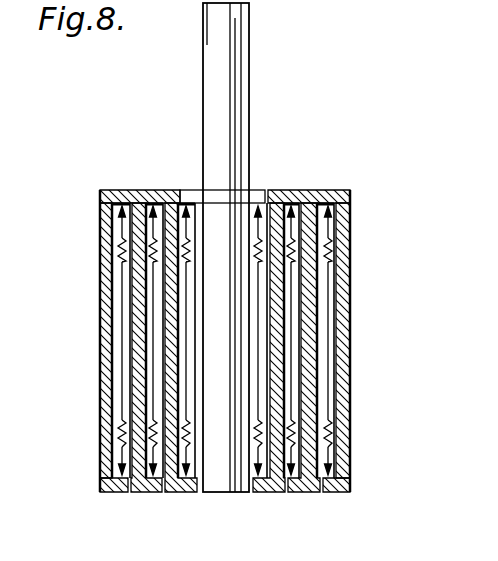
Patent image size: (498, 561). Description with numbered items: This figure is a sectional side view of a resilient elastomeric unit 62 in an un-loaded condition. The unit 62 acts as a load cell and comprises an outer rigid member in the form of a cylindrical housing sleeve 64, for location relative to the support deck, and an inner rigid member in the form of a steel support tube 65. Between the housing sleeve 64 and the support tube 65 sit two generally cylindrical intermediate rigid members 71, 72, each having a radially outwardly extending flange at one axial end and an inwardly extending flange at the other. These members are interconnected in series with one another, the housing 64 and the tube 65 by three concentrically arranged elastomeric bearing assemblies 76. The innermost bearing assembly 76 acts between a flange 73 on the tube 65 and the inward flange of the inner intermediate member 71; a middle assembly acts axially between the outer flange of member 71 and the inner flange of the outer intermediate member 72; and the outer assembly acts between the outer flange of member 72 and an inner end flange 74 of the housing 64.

The resilient elastomeric unit 62 is at (332, 184).
The cylindrical housing sleeve 64 is at (253, 361).
The steel support tube 65 is at (235, 70).
The inner intermediate member 71 is at (262, 492).
The outer intermediate member 72 is at (292, 492).
The flange 73 is at (262, 190).
The inner end flange 74 is at (333, 492).
The elastomeric bearing assemblies 76 is at (265, 280).